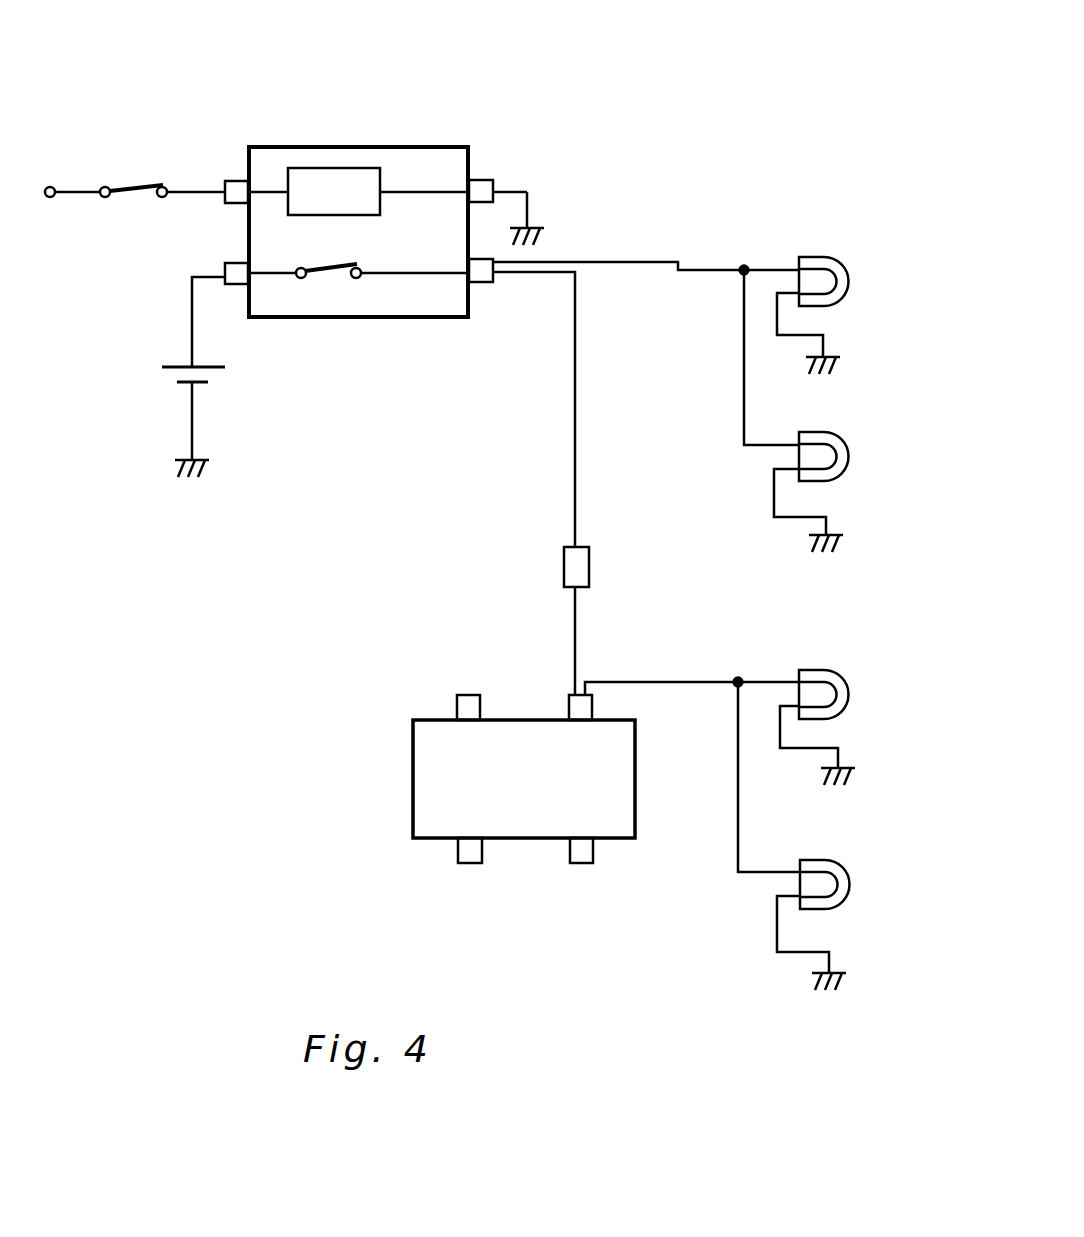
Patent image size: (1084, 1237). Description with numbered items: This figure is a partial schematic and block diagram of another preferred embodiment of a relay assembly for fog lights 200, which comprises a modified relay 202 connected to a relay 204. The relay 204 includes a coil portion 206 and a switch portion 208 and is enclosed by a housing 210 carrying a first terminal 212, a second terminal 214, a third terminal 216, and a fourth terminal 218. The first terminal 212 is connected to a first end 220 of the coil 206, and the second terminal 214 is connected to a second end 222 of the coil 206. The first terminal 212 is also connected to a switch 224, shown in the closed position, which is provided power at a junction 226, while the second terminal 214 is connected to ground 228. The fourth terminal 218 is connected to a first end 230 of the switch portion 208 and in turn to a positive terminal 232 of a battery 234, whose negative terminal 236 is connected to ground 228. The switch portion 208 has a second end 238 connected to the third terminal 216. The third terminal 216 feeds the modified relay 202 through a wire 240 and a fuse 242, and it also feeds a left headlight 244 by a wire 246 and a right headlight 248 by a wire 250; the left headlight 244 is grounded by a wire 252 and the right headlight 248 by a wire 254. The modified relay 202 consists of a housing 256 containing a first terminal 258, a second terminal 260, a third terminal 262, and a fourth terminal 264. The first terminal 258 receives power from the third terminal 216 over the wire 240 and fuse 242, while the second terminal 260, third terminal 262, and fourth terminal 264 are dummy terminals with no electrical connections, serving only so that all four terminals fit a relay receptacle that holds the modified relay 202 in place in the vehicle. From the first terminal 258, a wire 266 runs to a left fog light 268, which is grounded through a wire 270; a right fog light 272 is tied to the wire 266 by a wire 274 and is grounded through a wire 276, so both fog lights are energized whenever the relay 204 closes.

The relay assembly for fog lights 200 is at (240, 598).
The modified relay 202 is at (450, 612).
The relay 204 is at (354, 100).
The coil portion 206 is at (372, 218).
The switch portion 208 is at (329, 285).
The housing 210 is at (258, 147).
The first terminal 212 is at (232, 181).
The second terminal 214 is at (485, 181).
The third terminal 216 is at (483, 284).
The fourth terminal 218 is at (240, 263).
The first end of the coil 220 is at (268, 193).
The second end of the coil 222 is at (418, 193).
The switch 224 is at (120, 170).
The junction 226 is at (51, 198).
The ground 228 is at (528, 228).
The first end of the switch portion 230 is at (283, 277).
The positive terminal 232 is at (180, 366).
The battery 234 is at (133, 403).
The negative terminal 236 is at (201, 384).
The second end of the switch portion 238 is at (408, 277).
The wire 240 is at (574, 433).
The fuse 242 is at (563, 565).
The left headlight 244 is at (852, 258).
The wire 246 is at (710, 265).
The right headlight 248 is at (872, 433).
The wire 250 is at (744, 385).
The wire 252 is at (790, 340).
The wire 254 is at (774, 517).
The housing 256 is at (413, 780).
The first terminal 258 is at (570, 708).
The second terminal 260 is at (457, 708).
The third terminal 262 is at (458, 858).
The fourth terminal 264 is at (570, 858).
The wire 266 is at (668, 682).
The left fog light 268 is at (877, 680).
The wire 270 is at (780, 728).
The right fog light 272 is at (877, 875).
The wire 274 is at (738, 812).
The wire 276 is at (777, 928).